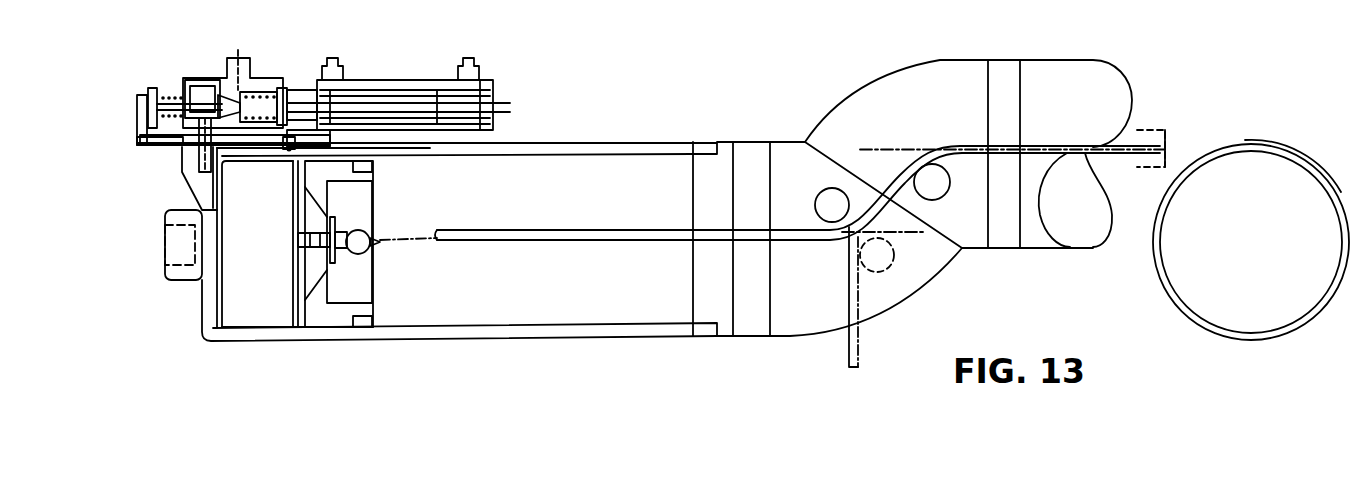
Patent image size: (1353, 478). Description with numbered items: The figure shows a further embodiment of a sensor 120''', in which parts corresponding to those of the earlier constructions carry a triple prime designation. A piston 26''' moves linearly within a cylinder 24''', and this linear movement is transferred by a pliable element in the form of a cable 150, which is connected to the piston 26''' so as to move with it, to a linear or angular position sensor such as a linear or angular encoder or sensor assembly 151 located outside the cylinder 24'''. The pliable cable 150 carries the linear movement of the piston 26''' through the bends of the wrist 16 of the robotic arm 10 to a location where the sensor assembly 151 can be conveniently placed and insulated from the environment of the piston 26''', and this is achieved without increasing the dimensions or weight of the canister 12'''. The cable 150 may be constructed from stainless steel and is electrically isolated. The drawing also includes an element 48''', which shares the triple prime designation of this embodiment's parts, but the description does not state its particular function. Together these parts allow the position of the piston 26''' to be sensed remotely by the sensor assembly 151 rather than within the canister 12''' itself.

The robotic arm 10 is at (795, 100).
The wrist 16 is at (893, 75).
The cable 150 is at (493, 235).
The sensor assembly 151 is at (1207, 313).
The cylinder 24''' is at (427, 112).
The lower housing rail 48''' is at (465, 358).
The canister 12''' is at (563, 273).
The piston 26''' is at (358, 282).
The sensor 120''' is at (967, 183).